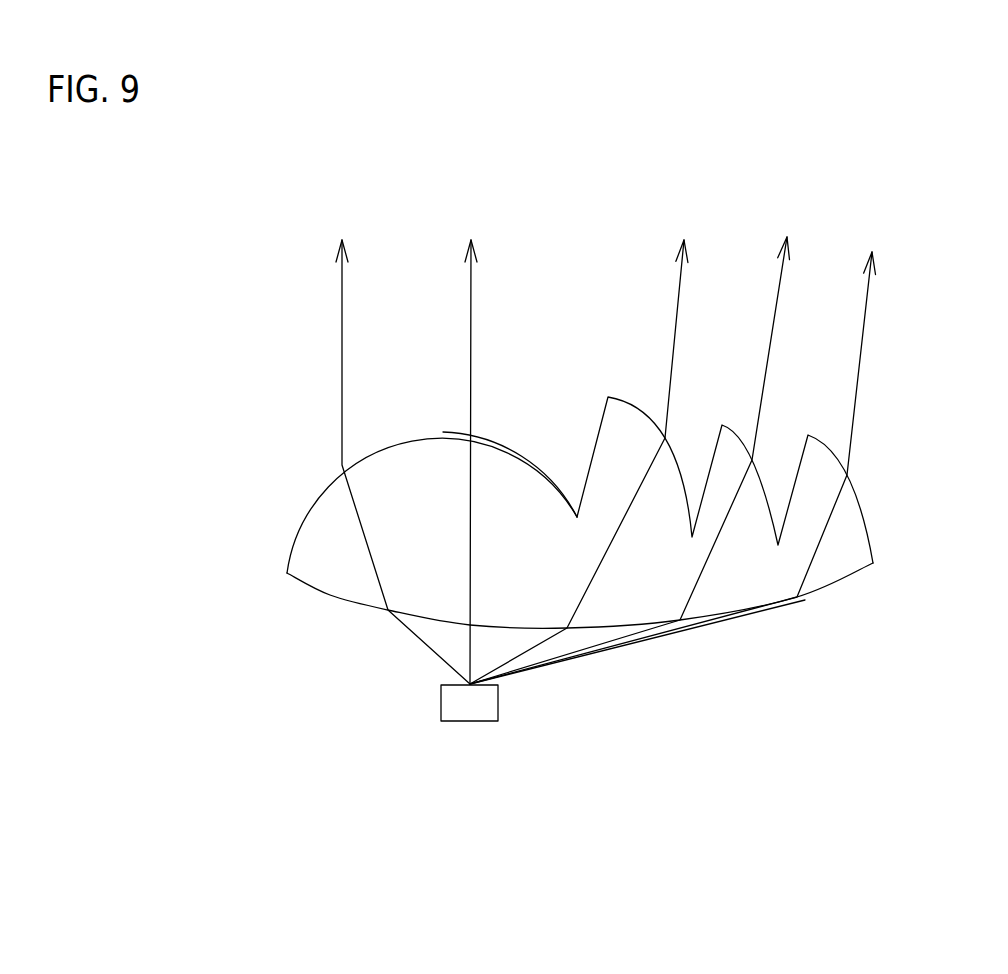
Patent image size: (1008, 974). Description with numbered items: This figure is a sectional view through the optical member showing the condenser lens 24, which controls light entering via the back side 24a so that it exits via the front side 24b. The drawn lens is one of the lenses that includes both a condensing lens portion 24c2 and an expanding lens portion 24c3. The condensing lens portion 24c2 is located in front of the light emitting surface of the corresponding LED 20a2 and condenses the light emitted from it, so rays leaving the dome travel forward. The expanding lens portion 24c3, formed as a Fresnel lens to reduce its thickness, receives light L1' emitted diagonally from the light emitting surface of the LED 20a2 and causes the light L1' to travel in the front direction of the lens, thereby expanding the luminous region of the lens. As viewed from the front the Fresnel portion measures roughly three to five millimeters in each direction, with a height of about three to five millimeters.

The condenser lens 24 is at (545, 898).
The back side 24a is at (350, 604).
The front side 24b is at (312, 493).
The condensing lens portion 24c2 is at (508, 450).
The expanding lens portion 24c3 is at (864, 378).
The LED 20a2 is at (500, 700).
The light L1' is at (673, 488).